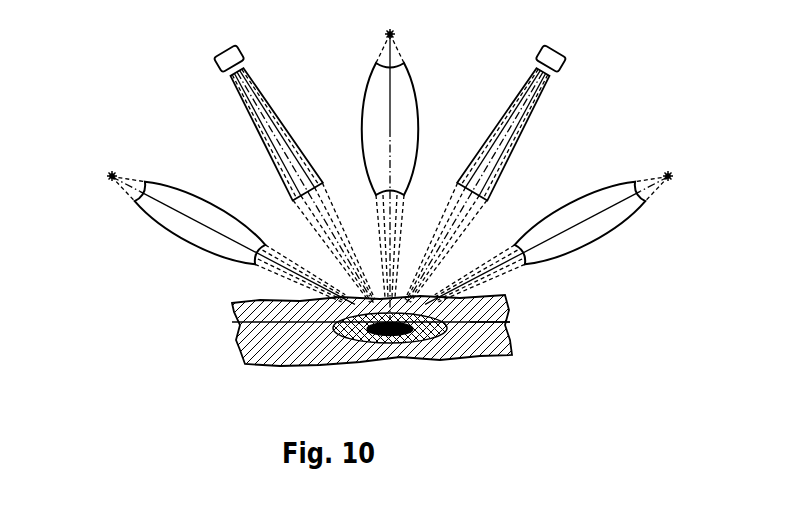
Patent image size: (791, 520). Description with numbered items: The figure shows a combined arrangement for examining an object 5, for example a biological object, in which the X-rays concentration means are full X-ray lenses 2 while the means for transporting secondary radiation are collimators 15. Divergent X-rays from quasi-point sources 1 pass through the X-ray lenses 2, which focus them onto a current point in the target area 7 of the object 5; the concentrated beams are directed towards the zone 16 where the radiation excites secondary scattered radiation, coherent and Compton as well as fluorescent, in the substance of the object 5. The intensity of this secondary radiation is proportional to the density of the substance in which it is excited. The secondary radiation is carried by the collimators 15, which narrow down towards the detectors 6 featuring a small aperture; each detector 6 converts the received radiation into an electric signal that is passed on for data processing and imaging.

The X-ray source 1 is at (107, 178).
The X-ray lens 2 is at (157, 216).
The object 5 is at (236, 348).
The detector 6 is at (222, 64).
The target area 7 is at (508, 320).
The collimator 15 is at (236, 84).
The zone 16 is at (232, 322).